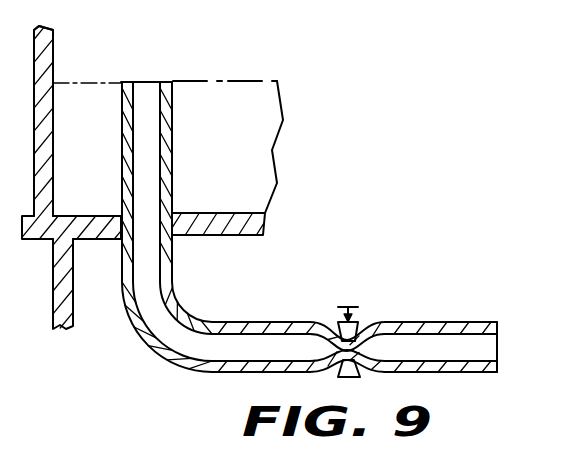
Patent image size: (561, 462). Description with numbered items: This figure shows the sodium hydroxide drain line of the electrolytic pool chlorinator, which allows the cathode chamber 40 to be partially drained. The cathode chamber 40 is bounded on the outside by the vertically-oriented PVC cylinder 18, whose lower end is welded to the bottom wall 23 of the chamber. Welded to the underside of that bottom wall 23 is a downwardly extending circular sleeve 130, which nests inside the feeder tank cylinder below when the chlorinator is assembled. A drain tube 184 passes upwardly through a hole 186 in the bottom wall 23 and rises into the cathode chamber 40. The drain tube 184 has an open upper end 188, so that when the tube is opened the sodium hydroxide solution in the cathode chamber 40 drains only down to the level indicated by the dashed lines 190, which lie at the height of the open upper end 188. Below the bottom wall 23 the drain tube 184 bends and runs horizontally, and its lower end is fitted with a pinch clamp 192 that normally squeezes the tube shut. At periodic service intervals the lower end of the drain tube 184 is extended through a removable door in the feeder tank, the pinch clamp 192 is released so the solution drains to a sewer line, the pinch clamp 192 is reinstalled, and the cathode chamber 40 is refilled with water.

The cathode chamber 40 is at (96, 61).
The cylinder 18 is at (42, 119).
The bottom wall 23 is at (103, 229).
The circular sleeve 130 is at (57, 277).
The open upper end 188 is at (148, 92).
The drain tube 184 is at (155, 345).
The dashed lines 190 is at (245, 80).
The hole 186 is at (175, 212).
The pinch clamp 192 is at (358, 330).